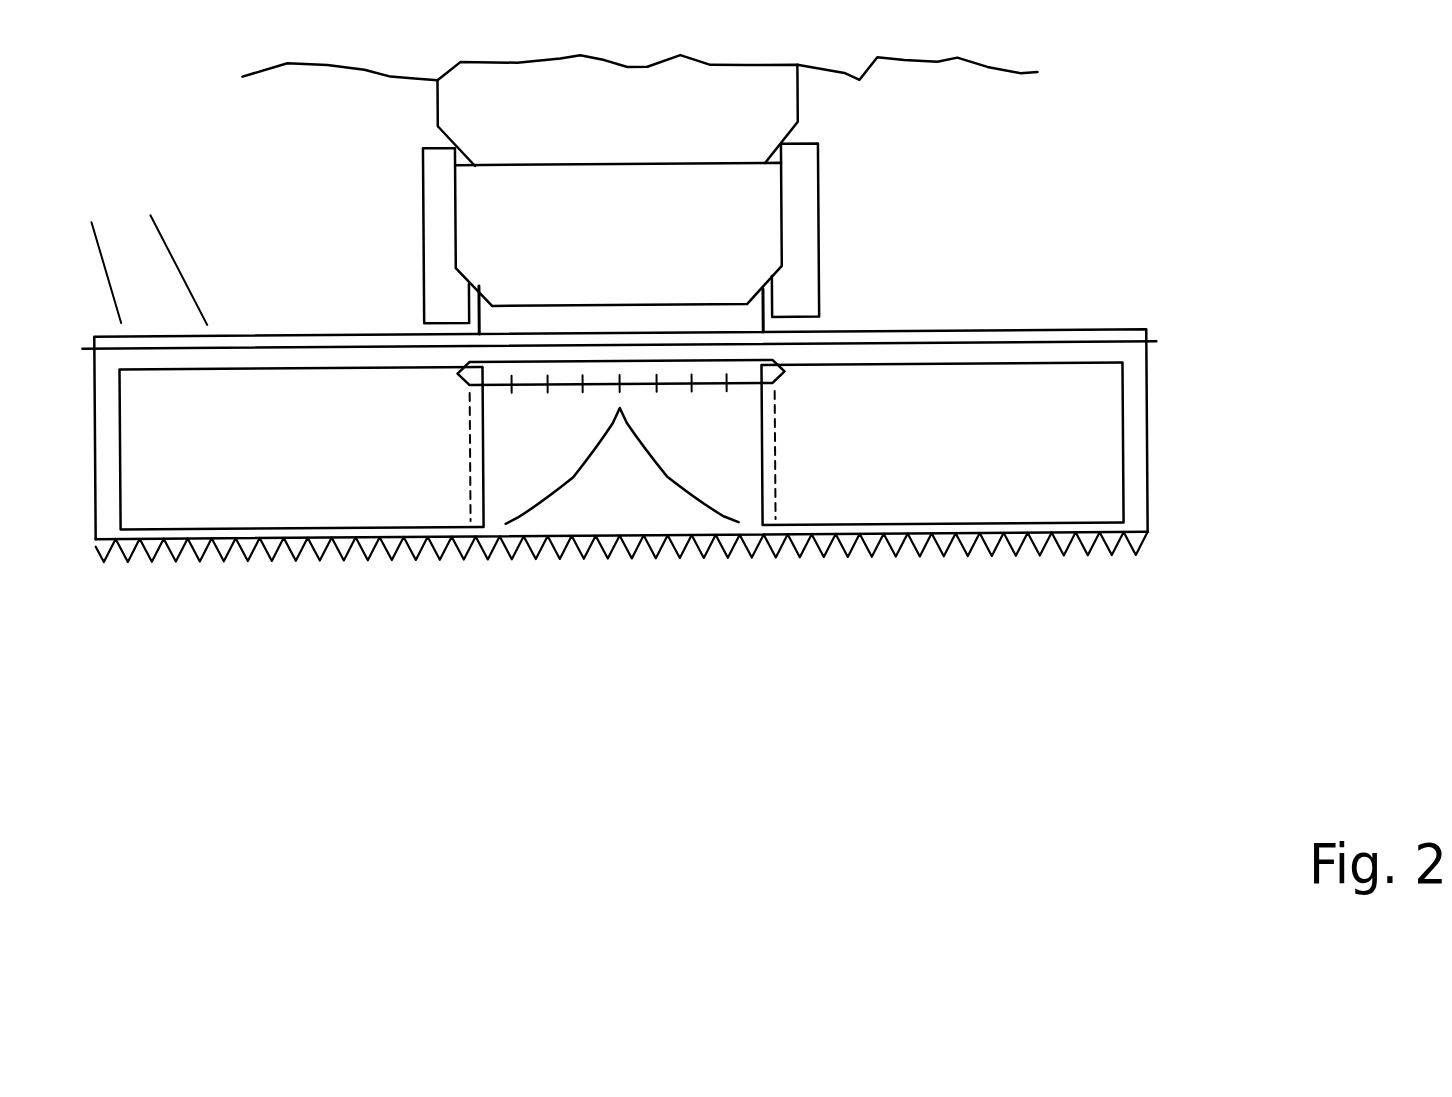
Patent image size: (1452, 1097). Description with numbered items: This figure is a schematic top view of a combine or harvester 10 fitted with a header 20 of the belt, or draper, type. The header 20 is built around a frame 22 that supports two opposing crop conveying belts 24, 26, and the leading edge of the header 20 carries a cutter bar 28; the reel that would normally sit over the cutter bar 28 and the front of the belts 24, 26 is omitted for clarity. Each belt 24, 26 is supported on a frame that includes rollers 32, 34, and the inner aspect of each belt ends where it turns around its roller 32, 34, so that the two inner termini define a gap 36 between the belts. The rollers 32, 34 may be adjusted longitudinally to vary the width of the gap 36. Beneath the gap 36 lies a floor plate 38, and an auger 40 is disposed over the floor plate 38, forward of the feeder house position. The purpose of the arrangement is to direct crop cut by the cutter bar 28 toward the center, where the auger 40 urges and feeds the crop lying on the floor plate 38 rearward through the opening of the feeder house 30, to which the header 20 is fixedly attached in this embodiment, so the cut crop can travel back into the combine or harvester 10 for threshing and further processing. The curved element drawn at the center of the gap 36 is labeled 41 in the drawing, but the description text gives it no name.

The combine or harvester 10 is at (998, 208).
The header 20 is at (672, 463).
The frame 22 is at (1135, 442).
The crop conveying belt 24 is at (347, 456).
The crop conveying belt 26 is at (920, 455).
The cutter bar 28 is at (928, 549).
The feeder house 30 is at (500, 322).
The roller 32 is at (467, 487).
The roller 34 is at (777, 484).
The gap 36 is at (623, 567).
The floor plate 38 is at (517, 482).
The auger 40 is at (750, 338).
The deflector 41 is at (613, 513).